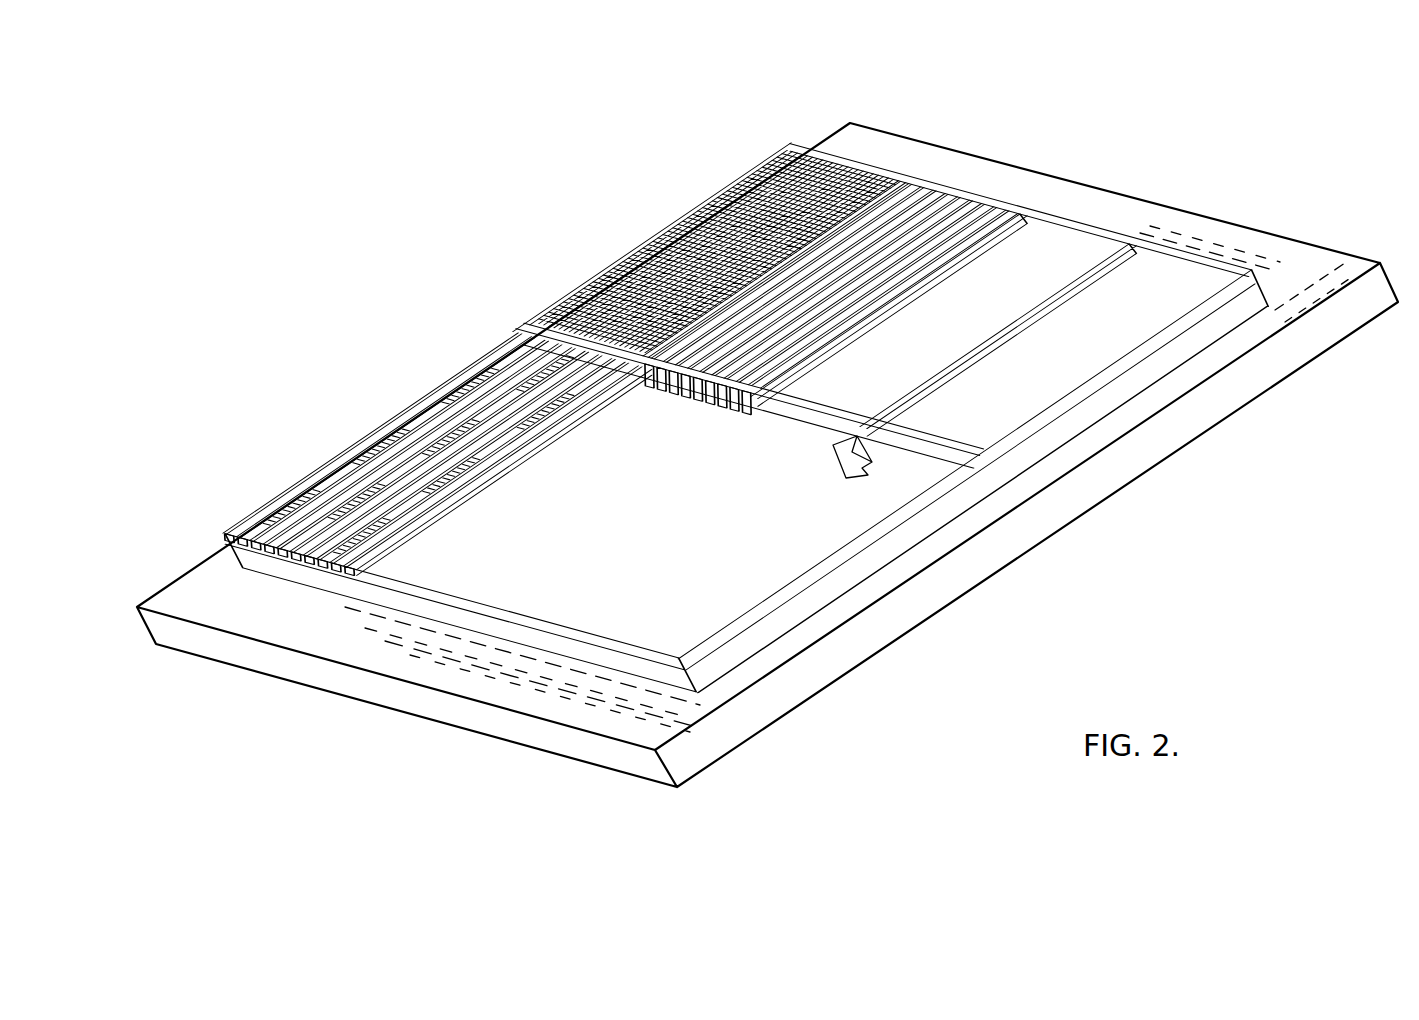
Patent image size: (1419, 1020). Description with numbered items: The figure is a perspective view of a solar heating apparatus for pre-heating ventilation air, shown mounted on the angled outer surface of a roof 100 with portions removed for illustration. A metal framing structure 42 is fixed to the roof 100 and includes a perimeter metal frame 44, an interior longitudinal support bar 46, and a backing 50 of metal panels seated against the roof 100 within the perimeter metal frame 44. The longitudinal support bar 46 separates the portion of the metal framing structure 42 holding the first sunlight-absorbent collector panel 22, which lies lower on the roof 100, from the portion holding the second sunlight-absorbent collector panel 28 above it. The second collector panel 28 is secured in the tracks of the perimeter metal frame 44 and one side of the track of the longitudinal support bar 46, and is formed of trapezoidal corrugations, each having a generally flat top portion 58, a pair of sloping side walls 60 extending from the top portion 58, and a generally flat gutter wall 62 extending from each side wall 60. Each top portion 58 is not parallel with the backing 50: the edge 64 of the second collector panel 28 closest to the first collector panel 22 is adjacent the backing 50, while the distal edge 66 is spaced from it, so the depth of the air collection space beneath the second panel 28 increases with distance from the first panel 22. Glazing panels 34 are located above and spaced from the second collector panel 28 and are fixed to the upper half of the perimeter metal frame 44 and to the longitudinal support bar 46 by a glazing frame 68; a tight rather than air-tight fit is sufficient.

The roof 100 is at (1212, 234).
The first sunlight-absorbent collector panel 22 is at (312, 528).
The second sunlight-absorbent collector panel 28 is at (658, 230).
The glazing 34 is at (720, 197).
The metal framing structure 42 is at (1100, 385).
The perimeter metal frame 44 is at (1066, 222).
The longitudinal support bar 46 is at (890, 470).
The backing 50 is at (1057, 370).
The flat top portion 58 is at (256, 548).
The sloping side wall 60 is at (262, 552).
The gutter wall 62 is at (265, 553).
The edge of the second collector panel closest to the first collector panel 64 is at (612, 403).
The edge of the second collector panel distal the first collector panel 66 is at (937, 212).
The glazing frame 68 is at (999, 203).